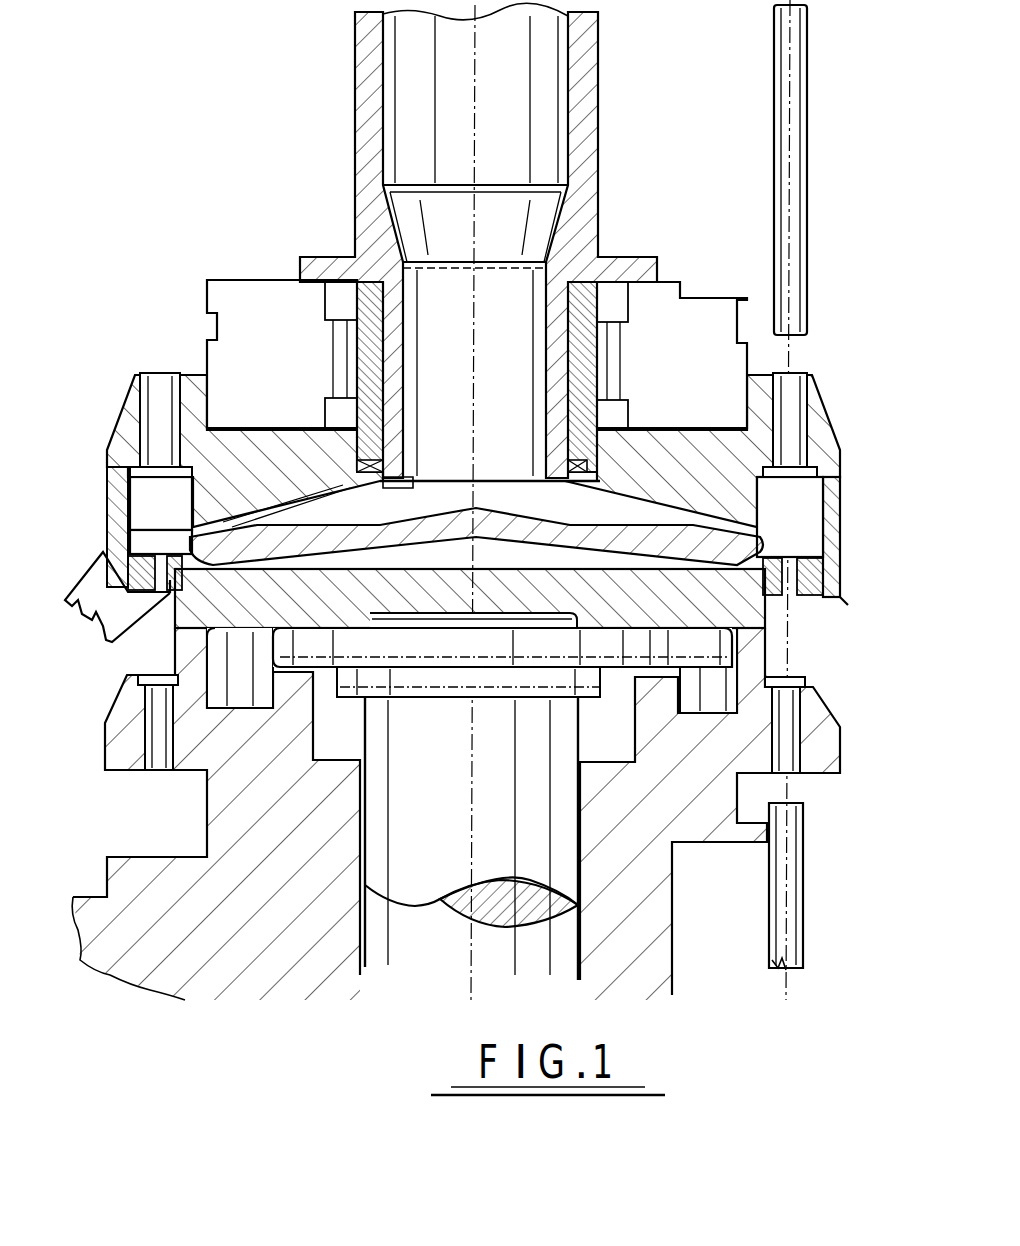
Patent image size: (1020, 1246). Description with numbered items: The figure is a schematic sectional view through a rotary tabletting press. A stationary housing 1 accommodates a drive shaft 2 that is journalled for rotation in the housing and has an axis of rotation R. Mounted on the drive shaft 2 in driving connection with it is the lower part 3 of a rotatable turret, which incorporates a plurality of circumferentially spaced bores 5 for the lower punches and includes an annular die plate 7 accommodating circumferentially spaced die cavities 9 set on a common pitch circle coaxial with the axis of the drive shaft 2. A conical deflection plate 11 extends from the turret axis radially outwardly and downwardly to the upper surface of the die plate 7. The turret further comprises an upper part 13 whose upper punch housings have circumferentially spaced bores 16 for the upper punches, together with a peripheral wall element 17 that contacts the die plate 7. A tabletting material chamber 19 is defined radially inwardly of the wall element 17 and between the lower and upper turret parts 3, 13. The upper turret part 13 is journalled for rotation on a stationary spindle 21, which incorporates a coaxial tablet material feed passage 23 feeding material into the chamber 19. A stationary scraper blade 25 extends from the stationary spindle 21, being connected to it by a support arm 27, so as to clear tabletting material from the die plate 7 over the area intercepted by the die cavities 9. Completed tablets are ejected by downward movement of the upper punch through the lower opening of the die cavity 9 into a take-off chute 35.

The stationary housing 1 is at (302, 853).
The drive shaft 2 is at (445, 818).
The lower part of the turret 3 is at (687, 590).
The bores for lower punches 5 is at (158, 740).
The annular die plate 7 is at (846, 599).
The die cavities 9 is at (133, 538).
The conical deflection plate 11 is at (537, 517).
The upper part of the turret 13 is at (370, 325).
The bores for upper punches 16 is at (162, 412).
The peripheral wall element 17 is at (830, 515).
The tabletting material chamber 19 is at (797, 527).
The stationary spindle 21 is at (587, 213).
The tablet material feed passage 23 is at (511, 192).
The stationary scraper blade 25 is at (150, 538).
The support arm 27 is at (292, 485).
The take-off chute 35 is at (112, 643).
The axis of rotation R is at (470, 978).